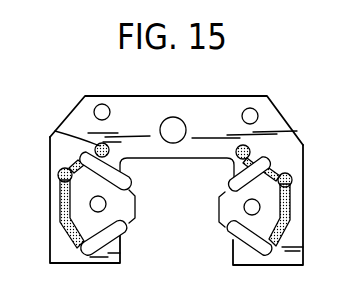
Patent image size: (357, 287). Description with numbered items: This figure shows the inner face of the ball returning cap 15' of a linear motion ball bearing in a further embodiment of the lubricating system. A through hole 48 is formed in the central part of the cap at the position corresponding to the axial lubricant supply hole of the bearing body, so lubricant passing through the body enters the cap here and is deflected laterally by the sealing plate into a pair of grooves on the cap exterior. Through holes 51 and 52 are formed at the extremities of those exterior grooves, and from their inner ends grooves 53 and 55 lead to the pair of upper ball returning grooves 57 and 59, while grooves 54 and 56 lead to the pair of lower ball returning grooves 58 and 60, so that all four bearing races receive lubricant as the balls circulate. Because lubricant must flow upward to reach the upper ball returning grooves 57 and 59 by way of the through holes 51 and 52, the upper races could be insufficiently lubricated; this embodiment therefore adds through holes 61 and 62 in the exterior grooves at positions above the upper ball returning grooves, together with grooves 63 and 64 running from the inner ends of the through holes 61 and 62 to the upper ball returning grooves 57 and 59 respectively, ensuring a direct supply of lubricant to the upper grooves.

The ball returning cap 15' is at (176, 127).
The through hole 48 is at (172, 117).
The through hole 51 is at (300, 200).
The through hole 52 is at (61, 222).
The groove 53 is at (293, 183).
The groove 54 is at (288, 225).
The groove 55 is at (58, 176).
The groove 56 is at (60, 238).
The upper ball returning groove 57 is at (232, 185).
The lower ball returning groove 58 is at (231, 231).
The upper ball returning groove 59 is at (128, 185).
The lower ball returning groove 60 is at (122, 228).
The through hole 61 is at (303, 143).
The through hole 62 is at (55, 131).
The groove 63 is at (252, 147).
The groove 64 is at (95, 149).